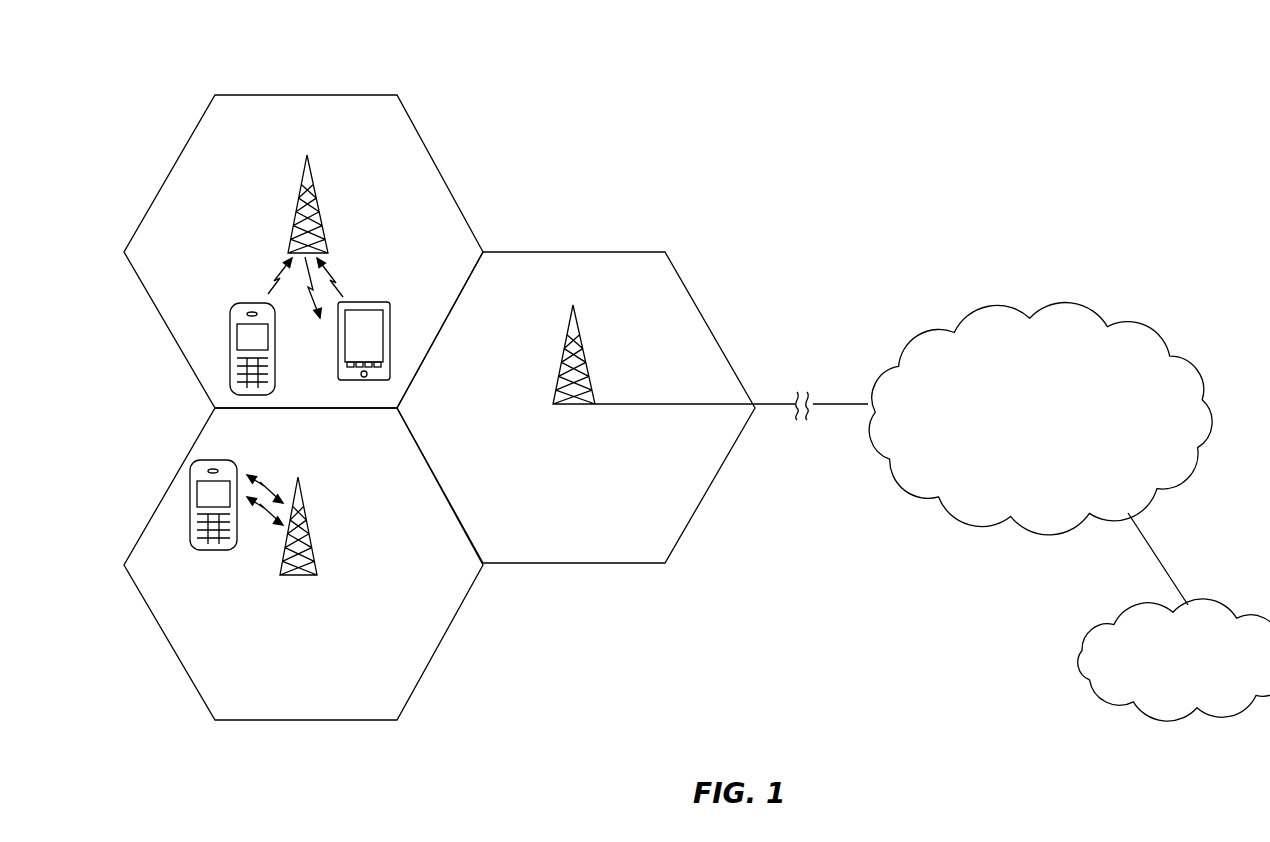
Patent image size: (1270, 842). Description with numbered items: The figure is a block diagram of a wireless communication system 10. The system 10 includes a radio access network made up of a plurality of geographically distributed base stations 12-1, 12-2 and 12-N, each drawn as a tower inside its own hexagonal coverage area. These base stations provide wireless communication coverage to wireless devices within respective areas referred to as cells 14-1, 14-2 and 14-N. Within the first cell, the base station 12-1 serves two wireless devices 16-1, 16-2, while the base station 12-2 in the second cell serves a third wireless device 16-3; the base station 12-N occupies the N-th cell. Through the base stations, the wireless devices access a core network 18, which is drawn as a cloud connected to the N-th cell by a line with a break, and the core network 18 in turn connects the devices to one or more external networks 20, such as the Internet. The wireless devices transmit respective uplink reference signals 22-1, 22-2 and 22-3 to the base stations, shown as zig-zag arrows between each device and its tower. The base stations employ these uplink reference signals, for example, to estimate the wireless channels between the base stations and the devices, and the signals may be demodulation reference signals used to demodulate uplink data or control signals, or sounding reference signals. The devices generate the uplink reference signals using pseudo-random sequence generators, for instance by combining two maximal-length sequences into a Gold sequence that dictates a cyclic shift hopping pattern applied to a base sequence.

The wireless communication system 10 is at (778, 104).
The base station 12-1 is at (297, 198).
The base station 12-2 is at (318, 571).
The base station 12-N is at (590, 366).
The cell 14-1 is at (421, 138).
The cell 14-2 is at (178, 657).
The cell 14-N is at (688, 283).
The wireless device 16-1 is at (232, 322).
The wireless device 16-2 is at (362, 304).
The wireless device 16-3 is at (220, 460).
The core network 18 is at (1040, 419).
The external network 20 is at (1174, 660).
The uplink reference signal 22-1 is at (268, 290).
The uplink reference signal 22-2 is at (339, 283).
The uplink reference signal 22-3 is at (265, 512).